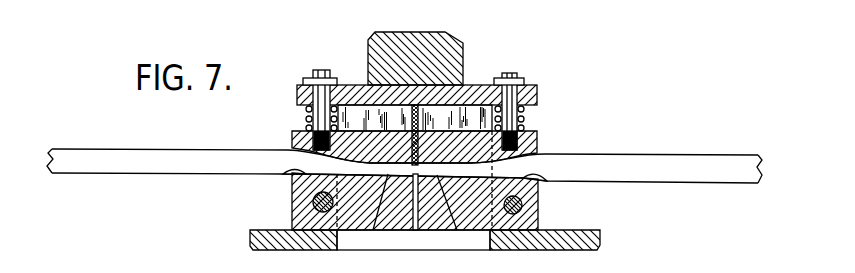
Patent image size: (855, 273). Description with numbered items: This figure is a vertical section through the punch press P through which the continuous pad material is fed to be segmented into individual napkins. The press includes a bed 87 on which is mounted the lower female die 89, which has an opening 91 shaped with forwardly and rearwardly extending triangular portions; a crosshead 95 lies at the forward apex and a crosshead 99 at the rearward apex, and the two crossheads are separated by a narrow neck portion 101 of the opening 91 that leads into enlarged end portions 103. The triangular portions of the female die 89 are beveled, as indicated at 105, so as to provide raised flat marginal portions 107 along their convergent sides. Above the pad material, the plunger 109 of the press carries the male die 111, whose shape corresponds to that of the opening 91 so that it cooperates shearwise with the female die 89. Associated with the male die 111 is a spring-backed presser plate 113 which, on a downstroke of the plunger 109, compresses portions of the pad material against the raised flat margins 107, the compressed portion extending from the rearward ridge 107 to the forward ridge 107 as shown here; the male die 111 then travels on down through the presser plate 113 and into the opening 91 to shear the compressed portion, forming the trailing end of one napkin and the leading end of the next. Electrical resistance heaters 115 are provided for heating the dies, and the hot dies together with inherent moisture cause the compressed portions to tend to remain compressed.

The punch press P is at (303, 64).
The bed 87 is at (278, 244).
The female die 89 is at (292, 201).
The opening 91 is at (355, 232).
The crosshead 95 is at (393, 232).
The crosshead 99 is at (437, 232).
The neck portion 101 is at (415, 232).
The enlarged end portions 103 is at (482, 234).
The bevels 105 is at (292, 143).
The raised flat marginal portions 107 is at (413, 241).
The plunger 109 is at (465, 49).
The male die 111 is at (382, 115).
The presser plate 113 is at (293, 132).
The electrical resistance heaters 115 is at (318, 210).